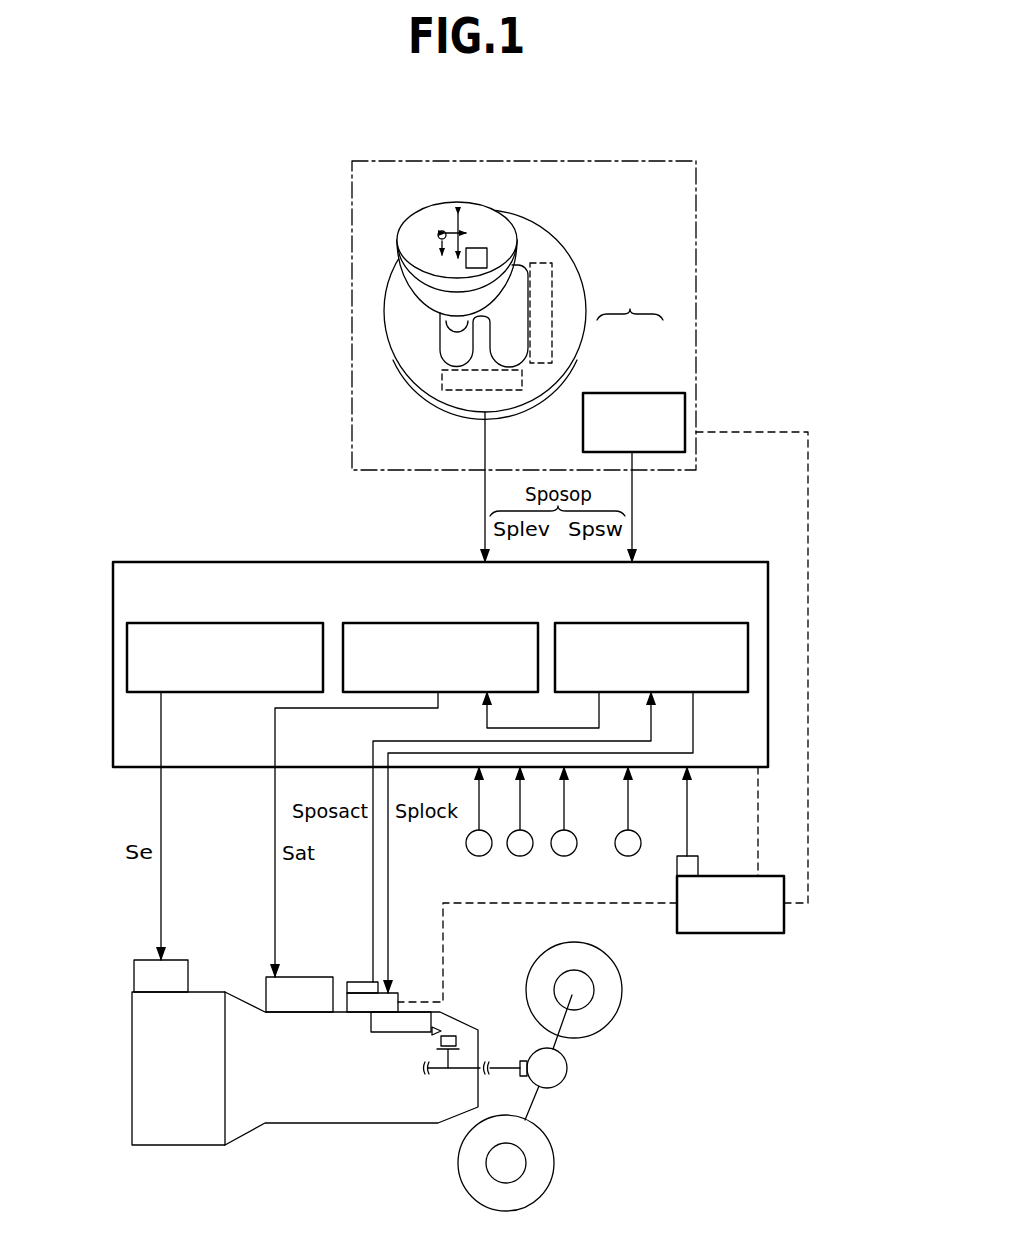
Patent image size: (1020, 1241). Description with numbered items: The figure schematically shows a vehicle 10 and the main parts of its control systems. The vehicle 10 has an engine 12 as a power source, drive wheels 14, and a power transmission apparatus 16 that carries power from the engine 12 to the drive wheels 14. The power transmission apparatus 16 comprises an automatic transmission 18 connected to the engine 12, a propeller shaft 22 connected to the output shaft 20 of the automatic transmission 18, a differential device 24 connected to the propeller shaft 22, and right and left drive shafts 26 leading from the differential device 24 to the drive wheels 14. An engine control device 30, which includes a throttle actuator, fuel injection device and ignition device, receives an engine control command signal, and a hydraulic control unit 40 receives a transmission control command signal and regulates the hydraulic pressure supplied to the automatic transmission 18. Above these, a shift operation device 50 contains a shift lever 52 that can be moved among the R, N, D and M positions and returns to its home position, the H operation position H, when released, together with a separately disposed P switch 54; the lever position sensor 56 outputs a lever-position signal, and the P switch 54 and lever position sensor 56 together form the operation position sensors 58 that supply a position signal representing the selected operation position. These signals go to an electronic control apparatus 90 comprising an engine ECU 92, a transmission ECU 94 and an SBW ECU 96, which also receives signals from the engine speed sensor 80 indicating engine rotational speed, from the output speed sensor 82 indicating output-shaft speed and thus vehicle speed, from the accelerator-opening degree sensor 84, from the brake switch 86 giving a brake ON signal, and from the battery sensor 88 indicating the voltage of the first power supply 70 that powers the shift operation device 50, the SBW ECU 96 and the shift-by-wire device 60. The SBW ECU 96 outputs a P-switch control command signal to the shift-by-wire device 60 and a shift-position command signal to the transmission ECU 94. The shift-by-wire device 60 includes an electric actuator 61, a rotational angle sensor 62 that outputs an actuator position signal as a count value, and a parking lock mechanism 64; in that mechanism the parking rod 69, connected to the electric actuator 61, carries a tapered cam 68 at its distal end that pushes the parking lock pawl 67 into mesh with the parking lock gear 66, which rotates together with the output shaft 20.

The vehicle 10 is at (730, 122).
The engine 12 is at (162, 1135).
The drive wheels 14 is at (593, 968).
The power transmission apparatus 16 is at (282, 1178).
The automatic transmission 18 is at (295, 1110).
The output shaft 20 is at (458, 1078).
The propeller shaft 22 is at (504, 1062).
The differential device 24 is at (557, 1073).
The drive shafts 26 is at (558, 1042).
The engine control device 30 is at (175, 968).
The hydraulic control unit 40 is at (305, 985).
The shift operation device 50 is at (488, 160).
The shift lever 52 is at (447, 204).
The P switch 54 is at (637, 404).
The lever position sensor 56 is at (527, 384).
The operation position sensors 58 is at (630, 304).
The shift-by-wire device 60 is at (373, 945).
The electric actuator 61 is at (393, 1000).
The rotational angle sensor 62 is at (357, 980).
The parking lock mechanism 64 is at (419, 1018).
The parking lock gear 66 is at (435, 1045).
The parking lock pawl 67 is at (452, 1036).
The cam 68 is at (434, 1027).
The parking rod 69 is at (388, 1034).
The first power supply 70 is at (768, 882).
The engine speed sensor 80 is at (481, 856).
The output speed sensor 82 is at (522, 856).
The accelerator-opening degree sensor 84 is at (566, 856).
The brake switch 86 is at (630, 856).
The battery sensor 88 is at (682, 866).
The electronic control apparatus 90 is at (715, 572).
The engine ECU 92 is at (268, 632).
The transmission ECU 94 is at (485, 632).
The SBW ECU 96 is at (695, 632).
The H operation position H is at (440, 232).